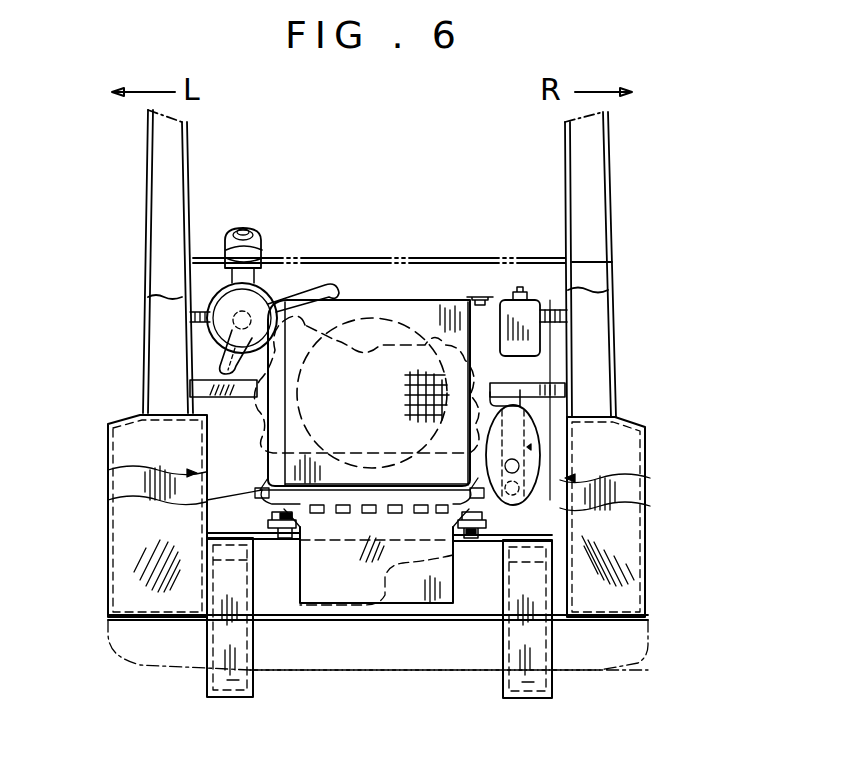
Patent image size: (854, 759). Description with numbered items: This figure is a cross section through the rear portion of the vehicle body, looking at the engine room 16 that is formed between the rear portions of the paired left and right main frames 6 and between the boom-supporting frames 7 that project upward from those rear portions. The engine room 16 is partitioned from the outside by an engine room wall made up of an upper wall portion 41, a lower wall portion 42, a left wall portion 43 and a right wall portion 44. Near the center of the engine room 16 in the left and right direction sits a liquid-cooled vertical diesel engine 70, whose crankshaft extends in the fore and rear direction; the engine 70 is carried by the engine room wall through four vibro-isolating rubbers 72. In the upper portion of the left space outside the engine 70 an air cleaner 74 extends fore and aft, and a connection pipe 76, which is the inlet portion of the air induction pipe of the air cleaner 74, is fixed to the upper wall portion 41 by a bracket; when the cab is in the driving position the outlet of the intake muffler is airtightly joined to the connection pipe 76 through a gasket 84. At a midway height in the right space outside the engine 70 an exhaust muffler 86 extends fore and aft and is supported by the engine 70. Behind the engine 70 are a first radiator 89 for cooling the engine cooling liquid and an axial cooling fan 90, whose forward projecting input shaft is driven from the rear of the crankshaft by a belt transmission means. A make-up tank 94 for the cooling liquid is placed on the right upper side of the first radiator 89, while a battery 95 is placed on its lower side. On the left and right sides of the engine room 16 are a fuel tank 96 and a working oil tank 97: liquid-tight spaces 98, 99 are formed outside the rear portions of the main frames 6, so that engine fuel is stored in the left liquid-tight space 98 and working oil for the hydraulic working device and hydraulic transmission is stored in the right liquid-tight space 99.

The main frame 6 is at (572, 478).
The boom-supporting frame 7 is at (148, 302).
The engine room 16 is at (237, 454).
The upper wall portion 41 is at (365, 258).
The lower wall portion 42 is at (306, 620).
The left wall portion 43 is at (206, 449).
The right wall portion 44 is at (554, 452).
The liquid-cooled vertical diesel engine 70 is at (263, 490).
The vibro-isolating rubber 72 is at (268, 526).
The air cleaner 74 is at (210, 288).
The connection pipe 76 is at (258, 236).
The gasket 84 is at (260, 246).
The exhaust muffler 86 is at (536, 422).
The first radiator 89 is at (436, 298).
The axial cooling fan 90 is at (384, 300).
The make-up tank 94 is at (537, 294).
The battery 95 is at (438, 604).
The fuel tank 96 is at (108, 559).
The working oil tank 97 is at (648, 556).
The left liquid-tight space 98 is at (134, 424).
The right liquid-tight space 99 is at (624, 428).